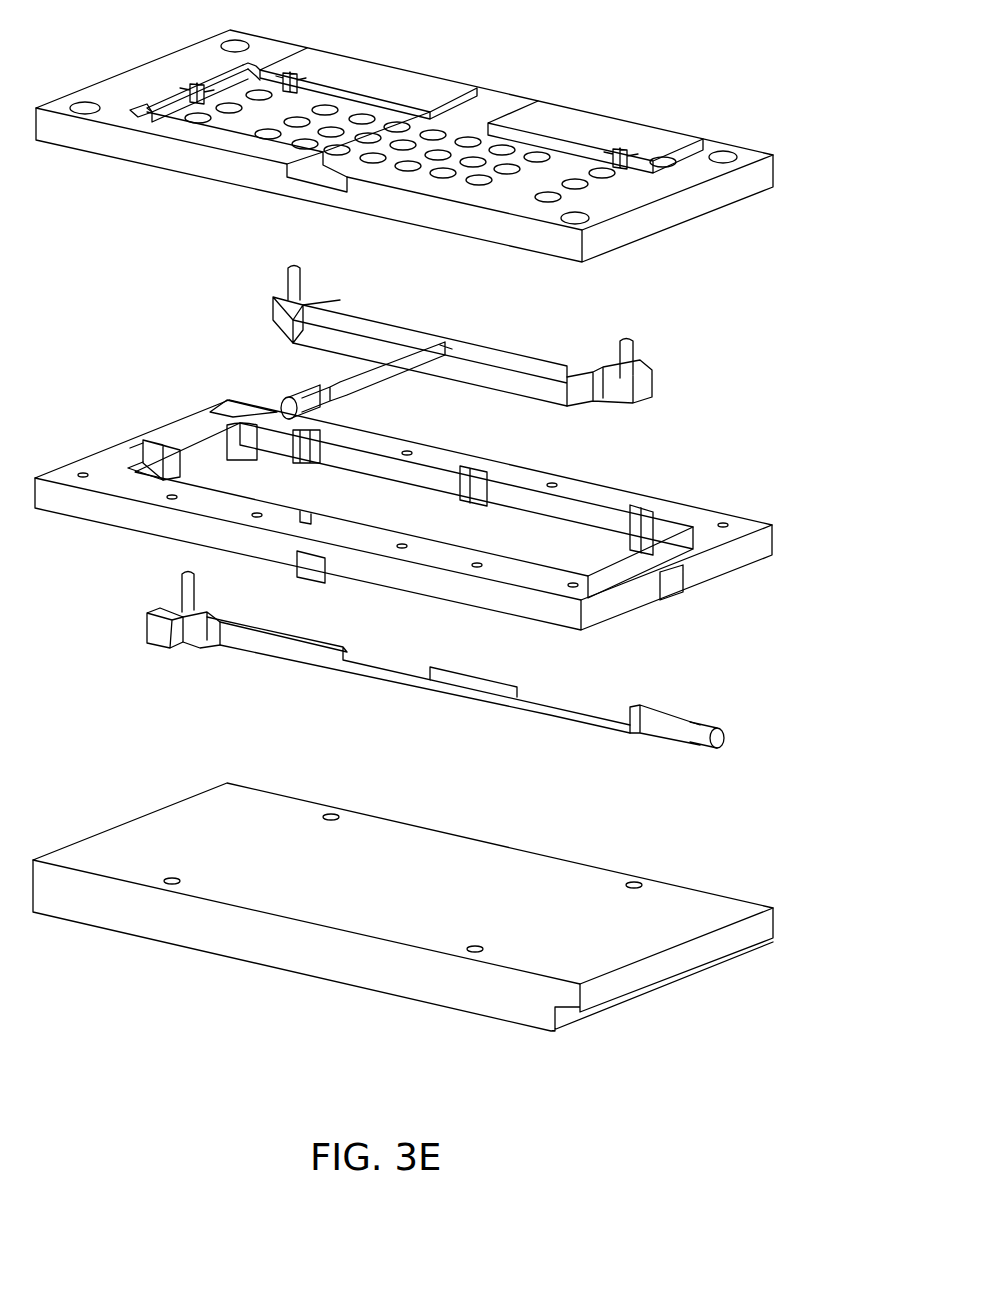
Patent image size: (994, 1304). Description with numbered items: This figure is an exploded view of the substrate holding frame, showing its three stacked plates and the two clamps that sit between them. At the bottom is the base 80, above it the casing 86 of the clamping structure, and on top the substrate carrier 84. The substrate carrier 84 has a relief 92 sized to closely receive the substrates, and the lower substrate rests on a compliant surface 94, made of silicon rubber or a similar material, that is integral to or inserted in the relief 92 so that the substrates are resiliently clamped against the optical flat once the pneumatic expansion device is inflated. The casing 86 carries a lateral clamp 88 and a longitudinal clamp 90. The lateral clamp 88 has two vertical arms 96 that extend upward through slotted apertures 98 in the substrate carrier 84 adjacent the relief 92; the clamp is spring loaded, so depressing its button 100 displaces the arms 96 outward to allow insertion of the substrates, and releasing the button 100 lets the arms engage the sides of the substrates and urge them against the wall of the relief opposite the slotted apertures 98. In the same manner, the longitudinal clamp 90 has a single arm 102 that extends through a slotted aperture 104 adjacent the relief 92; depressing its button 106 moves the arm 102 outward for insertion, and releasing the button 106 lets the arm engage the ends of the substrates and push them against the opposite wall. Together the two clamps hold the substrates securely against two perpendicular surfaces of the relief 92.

The base 80 is at (712, 946).
The substrate carrier 84 is at (432, 243).
The casing 86 is at (730, 550).
The lateral clamp 88 is at (345, 360).
The longitudinal clamp 90 is at (290, 667).
The relief 92 is at (586, 148).
The compliant surface 94 is at (452, 132).
The vertical arms 96 is at (293, 264).
The slotted apertures 98 is at (293, 76).
The button 100 is at (210, 410).
The arm 102 is at (182, 583).
The slotted aperture 104 is at (192, 86).
The button 106 is at (723, 737).